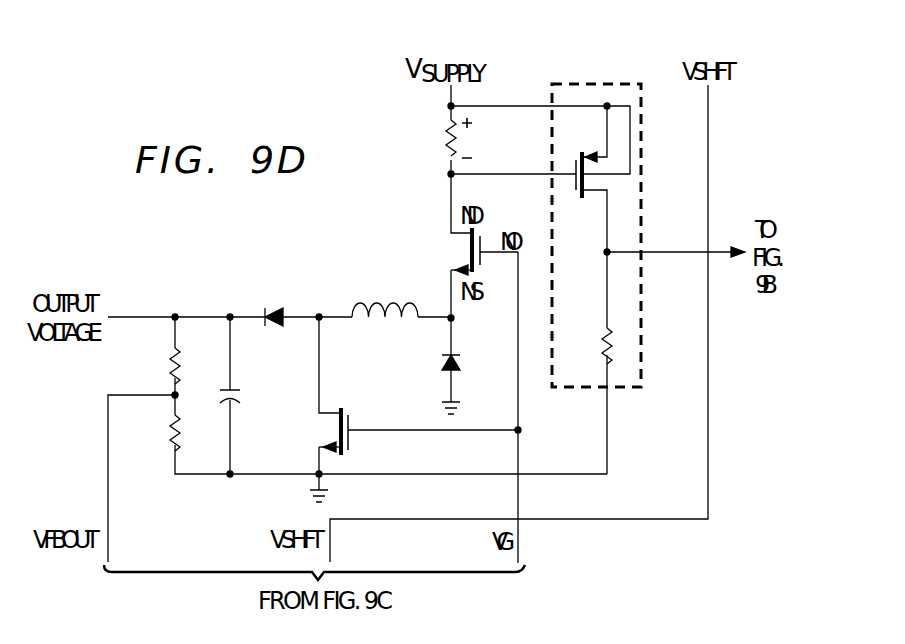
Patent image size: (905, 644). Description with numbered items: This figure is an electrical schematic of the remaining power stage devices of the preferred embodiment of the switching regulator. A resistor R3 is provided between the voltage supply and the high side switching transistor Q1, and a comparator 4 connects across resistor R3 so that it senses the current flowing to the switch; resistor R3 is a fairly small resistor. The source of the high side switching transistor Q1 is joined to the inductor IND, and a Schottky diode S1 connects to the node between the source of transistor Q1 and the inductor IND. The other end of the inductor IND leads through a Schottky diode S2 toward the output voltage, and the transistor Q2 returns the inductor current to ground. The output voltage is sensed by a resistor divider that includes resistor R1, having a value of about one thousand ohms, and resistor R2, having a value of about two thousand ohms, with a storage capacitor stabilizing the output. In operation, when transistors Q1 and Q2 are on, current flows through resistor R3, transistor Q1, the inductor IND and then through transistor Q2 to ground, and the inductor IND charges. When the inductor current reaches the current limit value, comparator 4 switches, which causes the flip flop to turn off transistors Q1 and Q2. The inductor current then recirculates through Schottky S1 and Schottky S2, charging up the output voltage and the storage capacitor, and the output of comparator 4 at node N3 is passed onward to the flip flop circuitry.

The comparator 4 is at (617, 386).
The resistor R1 is at (161, 433).
The resistor R2 is at (161, 366).
The resistor R3 is at (438, 138).
The high side switching transistor Q1 is at (476, 251).
The transistor Q2 is at (409, 431).
The Schottky diode S1 is at (439, 366).
The Schottky diode S2 is at (274, 304).
The inductor IND is at (385, 296).
The node N3 is at (661, 253).